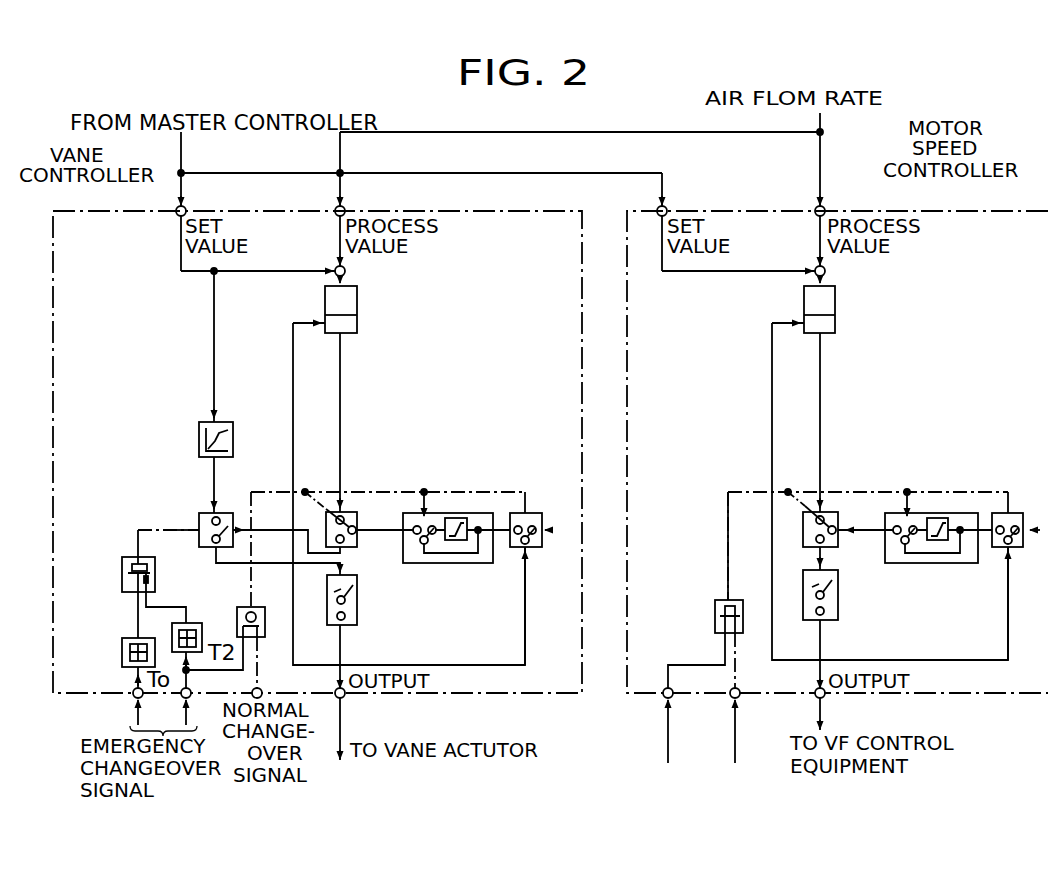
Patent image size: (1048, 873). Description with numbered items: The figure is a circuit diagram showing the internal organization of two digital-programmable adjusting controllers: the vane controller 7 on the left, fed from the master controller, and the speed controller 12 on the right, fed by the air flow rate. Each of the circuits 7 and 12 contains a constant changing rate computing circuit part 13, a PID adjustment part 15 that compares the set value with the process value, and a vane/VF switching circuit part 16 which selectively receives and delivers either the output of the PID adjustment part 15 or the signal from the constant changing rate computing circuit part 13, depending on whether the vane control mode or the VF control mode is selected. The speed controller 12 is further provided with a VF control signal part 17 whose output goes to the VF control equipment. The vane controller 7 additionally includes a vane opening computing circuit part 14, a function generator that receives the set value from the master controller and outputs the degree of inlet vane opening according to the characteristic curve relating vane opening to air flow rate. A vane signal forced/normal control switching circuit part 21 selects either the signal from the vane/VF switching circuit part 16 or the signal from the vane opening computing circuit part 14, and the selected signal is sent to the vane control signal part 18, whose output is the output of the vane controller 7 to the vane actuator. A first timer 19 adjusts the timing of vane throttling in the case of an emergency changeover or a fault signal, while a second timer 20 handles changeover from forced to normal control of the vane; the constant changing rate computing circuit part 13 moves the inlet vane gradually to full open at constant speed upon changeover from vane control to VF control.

The vane controller 7 is at (71, 211).
The speed controller 12 is at (946, 211).
The constant changing rate computing circuit part 13 is at (433, 563).
The vane opening computing circuit part 14 is at (199, 441).
The PID adjustment part 15 is at (357, 303).
The vane/VF switching circuit part 16 is at (346, 509).
The VF control signal part 17 is at (838, 591).
The vane control signal part 18 is at (357, 598).
The timer (T0) 19 is at (122, 651).
The timer (T2) 20 is at (190, 623).
The vane signal forced/normal control switching circuit part 21 is at (199, 525).